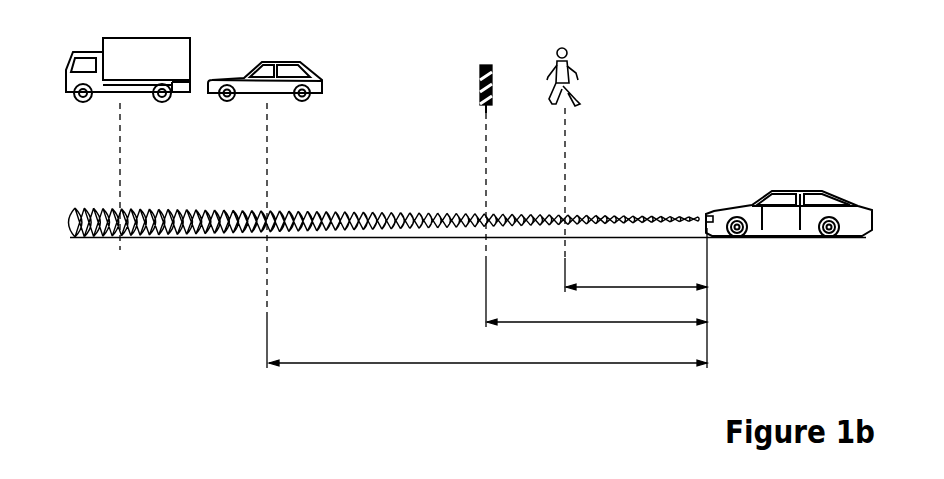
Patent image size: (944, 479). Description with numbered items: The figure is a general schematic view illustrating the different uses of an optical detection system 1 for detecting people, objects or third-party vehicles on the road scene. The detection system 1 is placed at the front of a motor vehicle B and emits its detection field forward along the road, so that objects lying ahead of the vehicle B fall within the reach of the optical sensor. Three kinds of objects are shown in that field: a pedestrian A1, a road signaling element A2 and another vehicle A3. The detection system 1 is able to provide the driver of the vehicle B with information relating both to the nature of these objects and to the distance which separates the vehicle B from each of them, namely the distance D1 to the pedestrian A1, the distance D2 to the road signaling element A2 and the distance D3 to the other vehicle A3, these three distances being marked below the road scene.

The pedestrian A1 is at (578, 80).
The road signaling element A2 is at (480, 83).
The other vehicle A3 is at (277, 90).
The detection system 1 is at (703, 214).
The vehicle B is at (783, 205).
The distance D1 is at (636, 276).
The distance D2 is at (597, 313).
The distance D3 is at (488, 354).